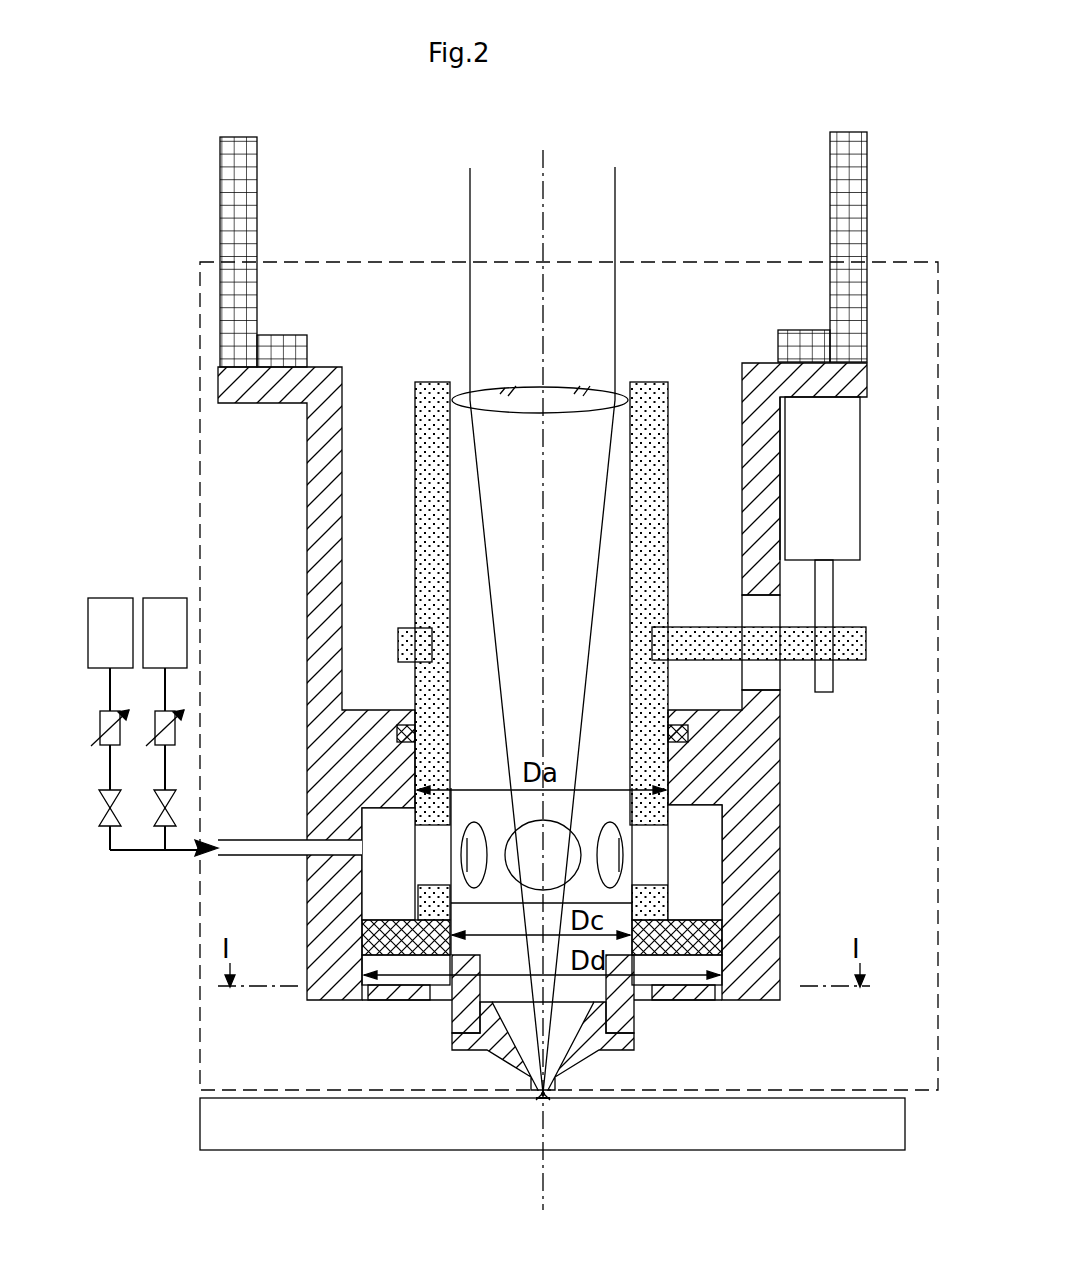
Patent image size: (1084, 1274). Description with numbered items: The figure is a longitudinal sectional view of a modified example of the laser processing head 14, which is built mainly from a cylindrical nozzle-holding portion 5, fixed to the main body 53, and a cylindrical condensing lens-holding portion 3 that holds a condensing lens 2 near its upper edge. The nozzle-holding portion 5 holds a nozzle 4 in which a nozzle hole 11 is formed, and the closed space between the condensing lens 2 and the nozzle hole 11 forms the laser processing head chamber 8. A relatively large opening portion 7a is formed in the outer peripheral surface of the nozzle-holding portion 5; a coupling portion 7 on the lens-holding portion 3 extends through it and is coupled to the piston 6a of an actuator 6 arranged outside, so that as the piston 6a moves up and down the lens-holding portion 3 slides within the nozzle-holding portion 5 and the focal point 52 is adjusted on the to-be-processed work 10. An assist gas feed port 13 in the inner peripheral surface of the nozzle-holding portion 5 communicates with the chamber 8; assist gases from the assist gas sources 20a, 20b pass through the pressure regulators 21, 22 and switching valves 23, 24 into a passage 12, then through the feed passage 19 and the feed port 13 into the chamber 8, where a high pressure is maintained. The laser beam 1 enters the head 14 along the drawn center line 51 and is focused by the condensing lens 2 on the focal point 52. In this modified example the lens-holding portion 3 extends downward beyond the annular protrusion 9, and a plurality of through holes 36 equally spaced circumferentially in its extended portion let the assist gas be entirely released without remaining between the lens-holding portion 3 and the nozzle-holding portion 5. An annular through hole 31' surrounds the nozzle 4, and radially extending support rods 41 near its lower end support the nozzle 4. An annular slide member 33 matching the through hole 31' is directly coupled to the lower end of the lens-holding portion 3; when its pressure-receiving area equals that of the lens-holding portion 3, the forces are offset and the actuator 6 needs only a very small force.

The laser beam 1 is at (616, 195).
The condensing lens 2 is at (582, 392).
The condensing lens-holding portion 3 is at (653, 383).
The nozzle 4 is at (622, 1050).
The nozzle-holding portion 5 is at (795, 928).
The actuator 6 is at (848, 442).
The piston 6a is at (823, 580).
The coupling portion 7 is at (858, 640).
The opening portion 7a is at (768, 596).
The laser processing head chamber 8 is at (710, 876).
The annular protrusion 9 is at (364, 702).
The to-be-processed work 10 is at (718, 1140).
The nozzle hole 11 is at (540, 1100).
The passage 12 is at (164, 866).
The assist gas feed port 13 is at (362, 862).
The laser processing head 14 is at (569, 676).
The feed passage 19 is at (258, 858).
The assist gas source 20a is at (108, 598).
The assist gas source 20b is at (165, 598).
The pressure regulator 21 is at (100, 722).
The pressure regulator 22 is at (157, 722).
The switching valve 23 is at (98, 800).
The switching valve 24 is at (160, 800).
The annular through hole 31' is at (561, 1012).
The annular slide member 33 is at (698, 920).
The through holes 36 is at (462, 858).
The support rods 41 is at (384, 1000).
The optical axis 51 is at (545, 170).
The focal point 52 is at (546, 1100).
The main body 53 is at (846, 218).